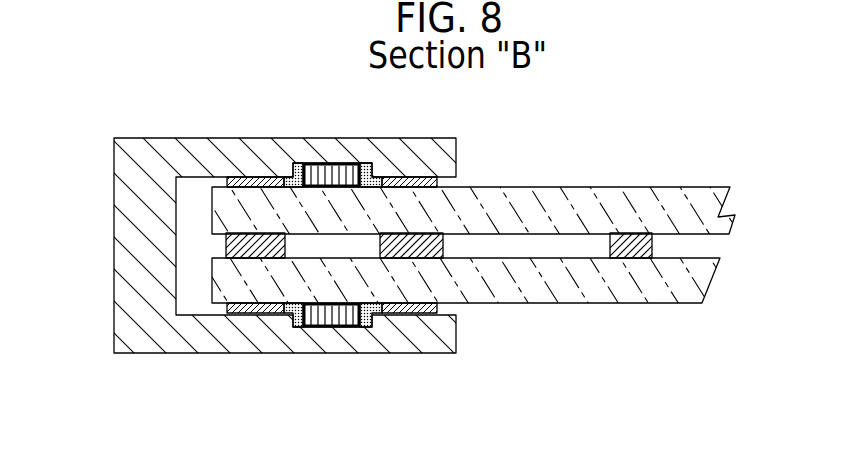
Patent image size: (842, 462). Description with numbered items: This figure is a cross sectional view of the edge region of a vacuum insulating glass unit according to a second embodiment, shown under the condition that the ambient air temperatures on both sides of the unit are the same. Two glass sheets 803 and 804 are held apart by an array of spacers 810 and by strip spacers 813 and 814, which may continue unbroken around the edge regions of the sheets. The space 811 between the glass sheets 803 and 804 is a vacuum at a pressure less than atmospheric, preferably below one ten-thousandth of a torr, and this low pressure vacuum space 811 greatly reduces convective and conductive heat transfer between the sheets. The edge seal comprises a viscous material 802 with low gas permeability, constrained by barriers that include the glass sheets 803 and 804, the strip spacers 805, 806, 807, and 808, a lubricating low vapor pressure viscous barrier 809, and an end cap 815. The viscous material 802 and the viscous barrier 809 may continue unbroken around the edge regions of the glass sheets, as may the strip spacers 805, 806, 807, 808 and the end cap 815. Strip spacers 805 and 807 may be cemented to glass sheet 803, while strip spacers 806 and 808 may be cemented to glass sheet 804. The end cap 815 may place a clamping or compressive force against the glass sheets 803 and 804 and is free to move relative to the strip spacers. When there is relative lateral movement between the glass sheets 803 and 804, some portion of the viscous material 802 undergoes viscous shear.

The viscous material 802 is at (313, 163).
The glass sheet 803 is at (578, 303).
The glass sheet 804 is at (578, 187).
The strip spacer 805 is at (237, 315).
The strip spacer 806 is at (237, 175).
The strip spacer 807 is at (418, 315).
The strip spacer 808 is at (418, 177).
The lubricating low vapor pressure viscous barrier 809 is at (287, 175).
The spacers 810 is at (652, 243).
The space 811 is at (495, 247).
The strip spacer 813 is at (226, 240).
The strip spacer 814 is at (443, 244).
The end cap 815 is at (128, 138).